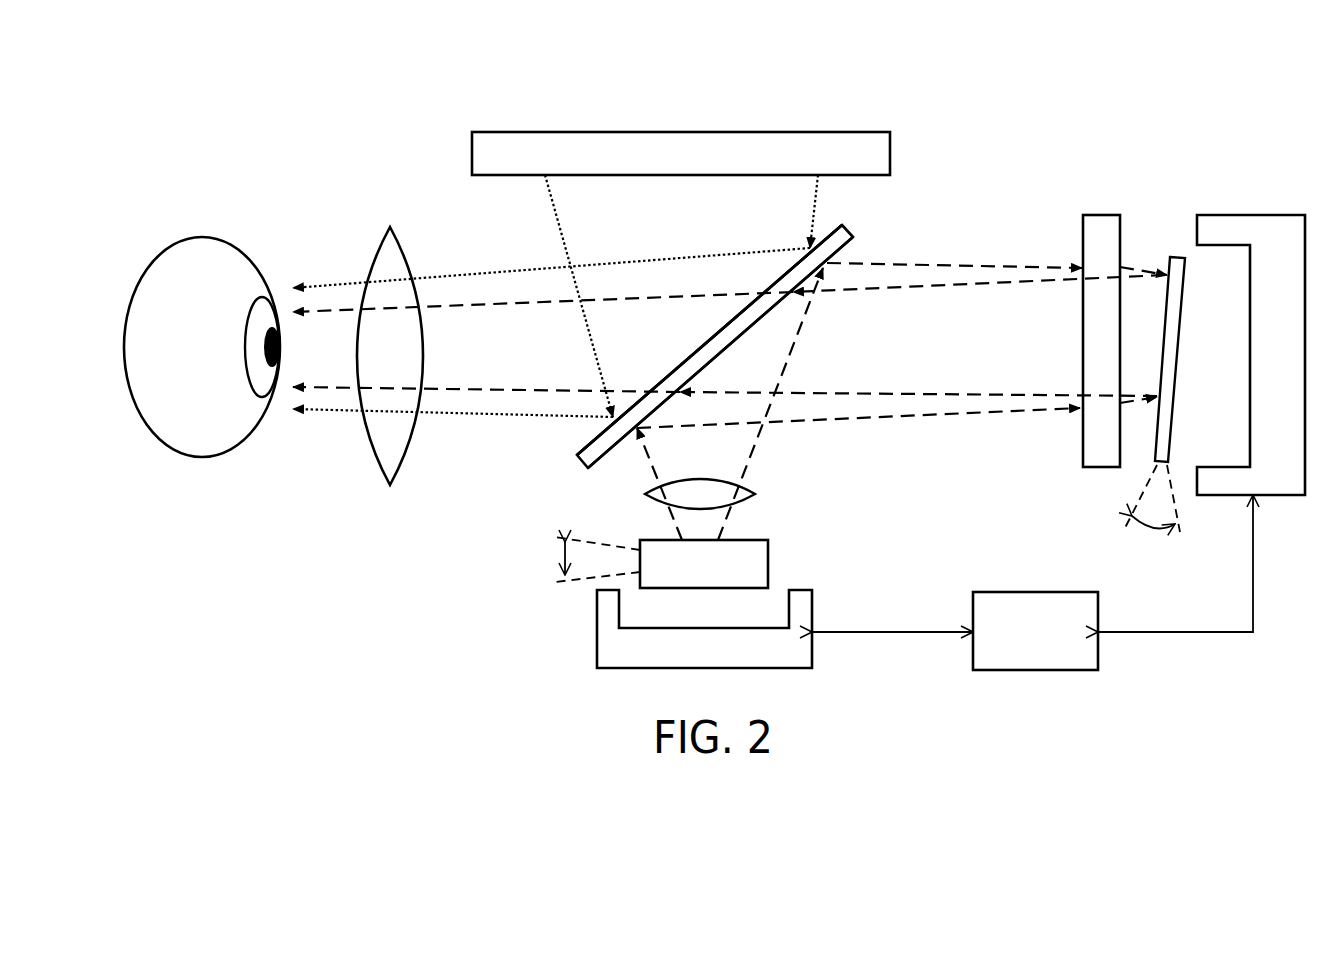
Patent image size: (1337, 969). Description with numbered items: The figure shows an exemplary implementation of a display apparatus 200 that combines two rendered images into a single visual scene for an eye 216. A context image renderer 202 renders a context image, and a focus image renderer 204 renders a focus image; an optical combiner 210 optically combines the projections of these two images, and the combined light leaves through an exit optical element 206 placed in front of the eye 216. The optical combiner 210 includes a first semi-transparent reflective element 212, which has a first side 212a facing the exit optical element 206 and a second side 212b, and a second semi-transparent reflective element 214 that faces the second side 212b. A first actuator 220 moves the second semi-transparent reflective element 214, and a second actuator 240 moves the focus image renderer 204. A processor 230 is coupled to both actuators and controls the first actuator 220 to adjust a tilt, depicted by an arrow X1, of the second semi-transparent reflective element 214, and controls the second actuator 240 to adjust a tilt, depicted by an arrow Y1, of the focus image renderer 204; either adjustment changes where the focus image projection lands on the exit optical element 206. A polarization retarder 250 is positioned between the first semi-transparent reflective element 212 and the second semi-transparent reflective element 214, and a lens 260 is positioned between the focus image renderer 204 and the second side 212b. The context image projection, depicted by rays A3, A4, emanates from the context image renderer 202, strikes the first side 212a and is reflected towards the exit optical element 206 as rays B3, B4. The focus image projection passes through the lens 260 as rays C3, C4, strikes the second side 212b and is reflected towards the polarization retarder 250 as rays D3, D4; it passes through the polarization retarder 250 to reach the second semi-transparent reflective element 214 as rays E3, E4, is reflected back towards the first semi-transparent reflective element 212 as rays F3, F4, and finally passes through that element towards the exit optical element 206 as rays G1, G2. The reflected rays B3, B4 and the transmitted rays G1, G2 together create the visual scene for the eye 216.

The display apparatus 200 is at (1192, 80).
The context image renderer 202 is at (660, 132).
The focus image renderer 204 is at (770, 549).
The exit optical element 206 is at (373, 250).
The optical combiner 210 is at (883, 232).
The first semi-transparent reflective element 212 is at (665, 378).
The first side 212a is at (690, 357).
The second side 212b is at (757, 321).
The second semi-transparent reflective element 214 is at (1176, 257).
The eye 216 is at (225, 452).
The first actuator 220 is at (1248, 215).
The processor 230 is at (1048, 643).
The second actuator 240 is at (597, 625).
The polarization retarder 250 is at (1100, 215).
The lens 260 is at (752, 492).
The ray A3 is at (565, 296).
The ray A4 is at (830, 211).
The ray B3 is at (453, 427).
The ray B4 is at (551, 268).
The ray C3 is at (648, 484).
The ray C4 is at (774, 404).
The ray D3 is at (858, 424).
The ray D4 is at (954, 255).
The ray E3 is at (1138, 417).
The ray E4 is at (1143, 259).
The ray F3 is at (918, 382).
The ray F4 is at (979, 294).
The ray G1 is at (486, 377).
The ray G2 is at (543, 312).
The arrow X1 is at (1152, 511).
The arrow Y1 is at (579, 559).